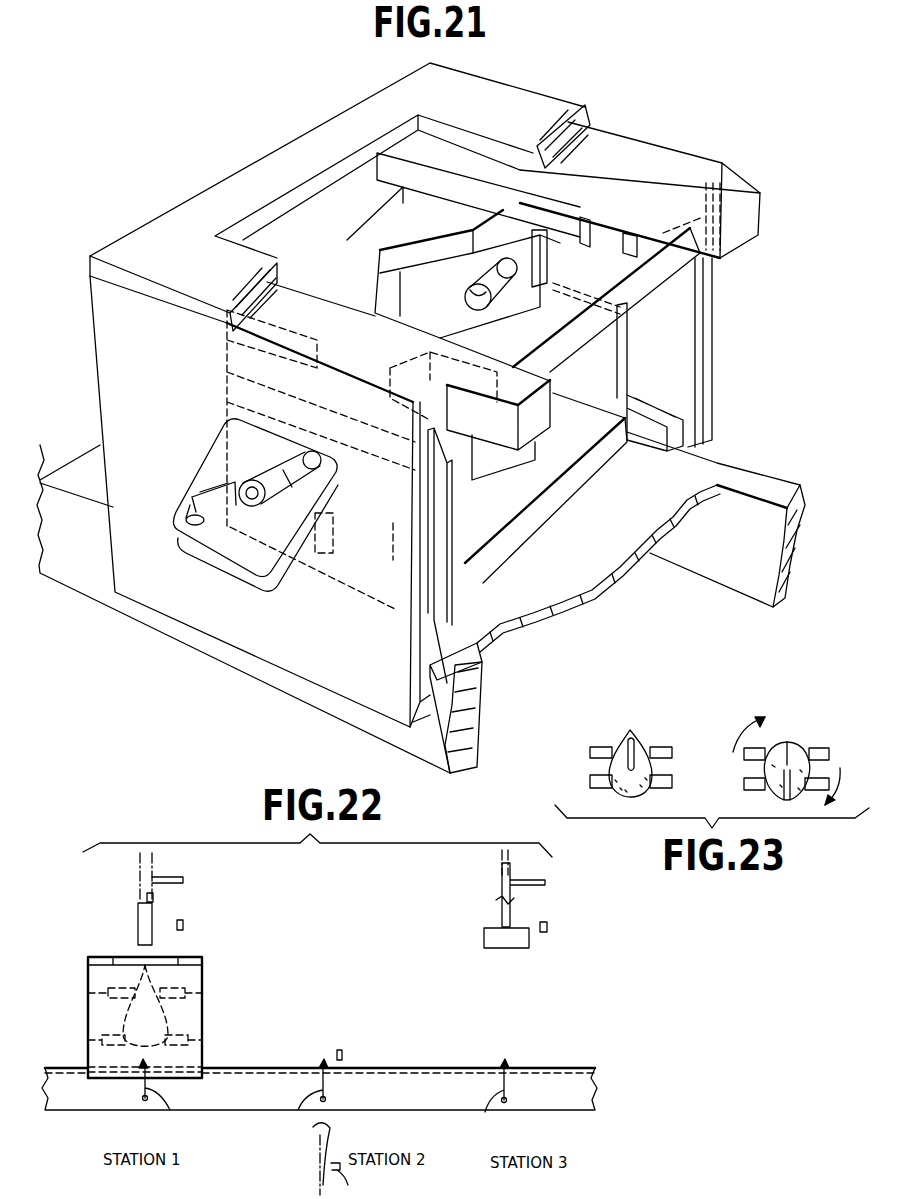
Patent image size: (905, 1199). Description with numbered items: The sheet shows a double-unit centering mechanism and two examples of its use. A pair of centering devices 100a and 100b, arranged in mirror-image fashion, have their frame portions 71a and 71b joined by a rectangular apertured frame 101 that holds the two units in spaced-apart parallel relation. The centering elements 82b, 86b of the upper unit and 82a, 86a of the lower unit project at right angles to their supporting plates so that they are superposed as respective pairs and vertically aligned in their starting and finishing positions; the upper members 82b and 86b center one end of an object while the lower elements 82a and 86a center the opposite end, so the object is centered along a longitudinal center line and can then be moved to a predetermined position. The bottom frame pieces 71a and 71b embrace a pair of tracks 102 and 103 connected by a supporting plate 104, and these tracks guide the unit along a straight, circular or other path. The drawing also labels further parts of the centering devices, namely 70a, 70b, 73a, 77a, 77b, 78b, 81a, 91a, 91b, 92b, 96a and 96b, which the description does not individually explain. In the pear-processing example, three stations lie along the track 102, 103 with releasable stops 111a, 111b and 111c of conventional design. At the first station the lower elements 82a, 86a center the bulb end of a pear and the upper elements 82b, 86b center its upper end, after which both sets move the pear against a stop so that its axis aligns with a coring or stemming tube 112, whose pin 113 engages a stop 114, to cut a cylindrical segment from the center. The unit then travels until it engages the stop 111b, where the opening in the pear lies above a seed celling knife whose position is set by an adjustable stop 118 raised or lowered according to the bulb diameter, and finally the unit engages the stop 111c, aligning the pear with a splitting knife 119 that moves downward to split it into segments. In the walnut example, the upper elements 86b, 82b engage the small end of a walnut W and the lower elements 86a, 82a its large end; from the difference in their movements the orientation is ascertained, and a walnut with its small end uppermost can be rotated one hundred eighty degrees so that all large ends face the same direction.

In FIG. 21, the rectangular apertured frame 101 is at (345, 149).
In FIG. 22, the rectangular apertured frame 101 is at (203, 958).
In FIG. 21, the centering device 100a is at (235, 628).
In FIG. 22, the centering device 100a is at (195, 1005).
In FIG. 21, the centering device 100b is at (678, 145).
In FIG. 21, the housing 70a is at (330, 630).
In FIG. 21, the post 70b is at (710, 325).
In FIG. 21, the frame portion 71a is at (546, 418).
In FIG. 21, the frame portion 71b is at (752, 228).
In FIG. 21, the aperture 73a is at (205, 462).
In FIG. 21, the guide strip 77a is at (425, 603).
In FIG. 21, the guide strip 77b is at (700, 368).
In FIG. 21, the bracket 78b is at (652, 442).
In FIG. 21, the pivot 81a is at (176, 515).
In FIG. 21, the lower centering element 82a is at (562, 495).
In FIG. 22, the lower centering element 82a is at (205, 1044).
In FIG. 23, the lower centering element 82a is at (672, 788).
In FIG. 21, the upper centering element 82b is at (612, 283).
In FIG. 22, the upper centering element 82b is at (205, 992).
In FIG. 23, the upper centering element 82b is at (662, 747).
In FIG. 21, the lower centering element 86a is at (333, 527).
In FIG. 22, the lower centering element 86a is at (84, 1047).
In FIG. 23, the lower centering element 86a is at (590, 777).
In FIG. 21, the upper centering element 86b is at (370, 234).
In FIG. 22, the upper centering element 86b is at (84, 999).
In FIG. 23, the upper centering element 86b is at (603, 747).
In FIG. 21, the strip 91a is at (200, 490).
In FIG. 21, the panel 91b is at (450, 290).
In FIG. 21, the cylinder 92b is at (496, 272).
In FIG. 21, the roller 96a is at (485, 293).
In FIG. 21, the roller 96b is at (249, 480).
In FIG. 21, the track 102 is at (478, 720).
In FIG. 22, the track 102 is at (428, 1099).
In FIG. 21, the track 103 is at (740, 590).
In FIG. 21, the supporting plate 104 is at (548, 605).
In FIG. 22, the supporting plate 104 is at (395, 1068).
In FIG. 22, the releasable stop 111a is at (170, 1096).
In FIG. 22, the releasable stop 111b is at (296, 1096).
In FIG. 22, the stop 111c is at (484, 1098).
In FIG. 22, the coring or stemming tube 112 is at (138, 906).
In FIG. 22, the pin 113 is at (183, 877).
In FIG. 22, the stop 114 is at (183, 927).
In FIG. 22, the adjustable stop 118 is at (344, 1053).
In FIG. 22, the splitting knife 119 is at (529, 940).
In FIG. 23, the walnut W is at (618, 793).